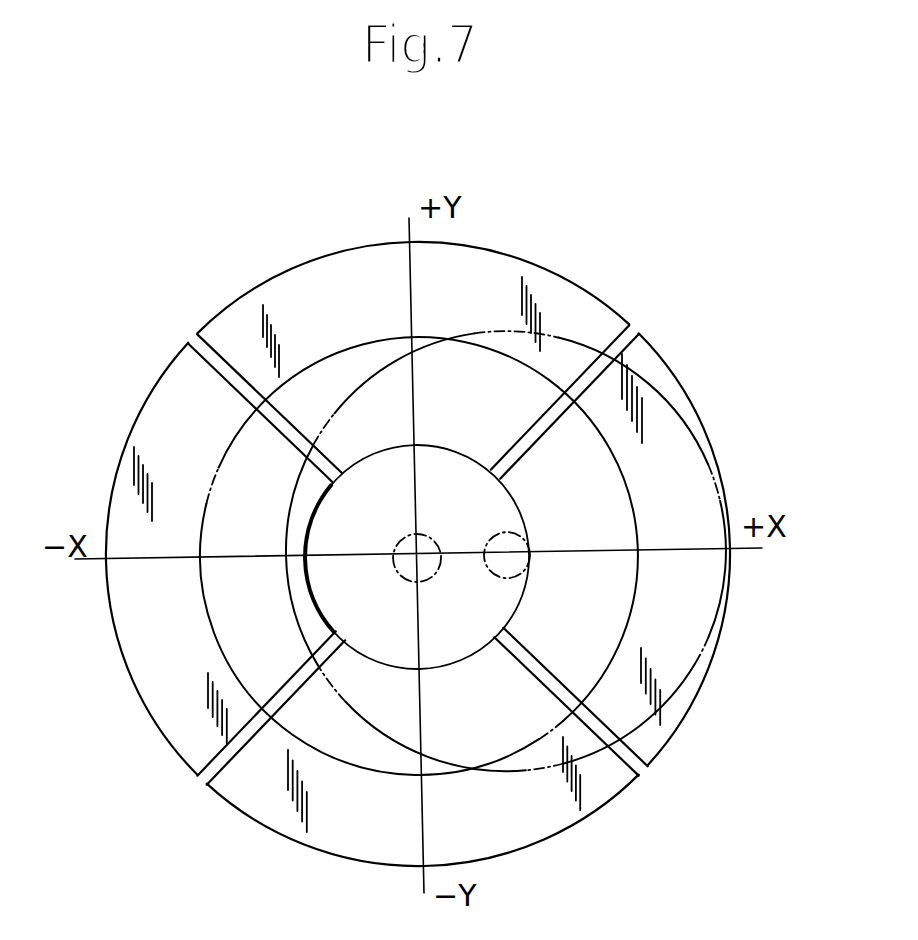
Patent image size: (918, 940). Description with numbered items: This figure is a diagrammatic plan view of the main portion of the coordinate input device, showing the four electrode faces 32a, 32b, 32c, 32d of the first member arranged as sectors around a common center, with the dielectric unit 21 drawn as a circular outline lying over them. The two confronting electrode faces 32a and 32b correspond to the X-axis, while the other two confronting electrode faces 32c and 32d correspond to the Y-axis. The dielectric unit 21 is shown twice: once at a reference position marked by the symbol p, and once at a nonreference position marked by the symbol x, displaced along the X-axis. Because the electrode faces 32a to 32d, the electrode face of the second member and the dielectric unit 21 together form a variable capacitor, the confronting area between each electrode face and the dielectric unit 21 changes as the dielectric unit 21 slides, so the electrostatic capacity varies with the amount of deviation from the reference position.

The dielectric unit 21 is at (487, 487).
The electrode face 32a is at (700, 687).
The electrode face 32b is at (130, 683).
The electrode face 32c is at (556, 275).
The electrode face 32d is at (586, 818).